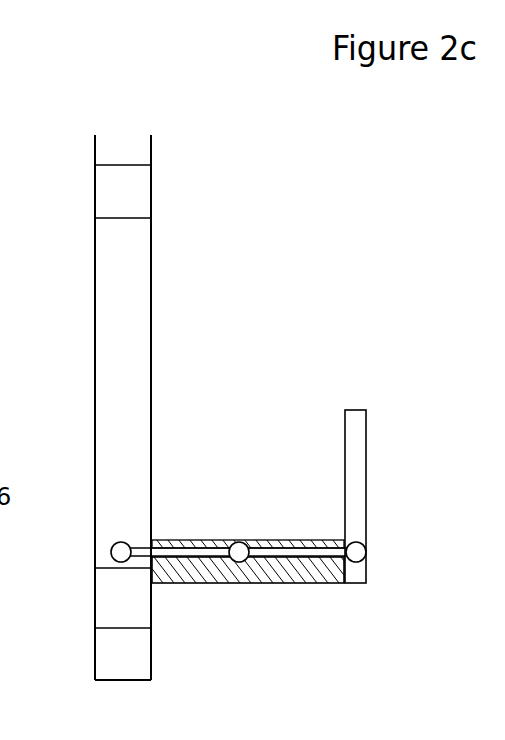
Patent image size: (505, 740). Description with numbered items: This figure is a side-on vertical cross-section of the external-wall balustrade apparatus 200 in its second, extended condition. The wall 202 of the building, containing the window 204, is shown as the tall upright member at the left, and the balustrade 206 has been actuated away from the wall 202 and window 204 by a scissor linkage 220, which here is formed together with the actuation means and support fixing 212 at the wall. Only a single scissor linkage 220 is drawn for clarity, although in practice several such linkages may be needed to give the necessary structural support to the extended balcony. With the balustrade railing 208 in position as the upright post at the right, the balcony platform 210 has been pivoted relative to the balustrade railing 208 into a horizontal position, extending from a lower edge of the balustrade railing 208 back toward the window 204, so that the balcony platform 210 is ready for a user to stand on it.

The external-wall balustrade apparatus 200 is at (286, 260).
The wall 202 is at (164, 210).
The window 204 is at (106, 292).
The balustrade 206 is at (388, 521).
The balustrade railing 208 is at (363, 395).
The balcony platform 210 is at (200, 530).
The support fixing 212 is at (105, 573).
The scissor linkage 220 is at (294, 568).